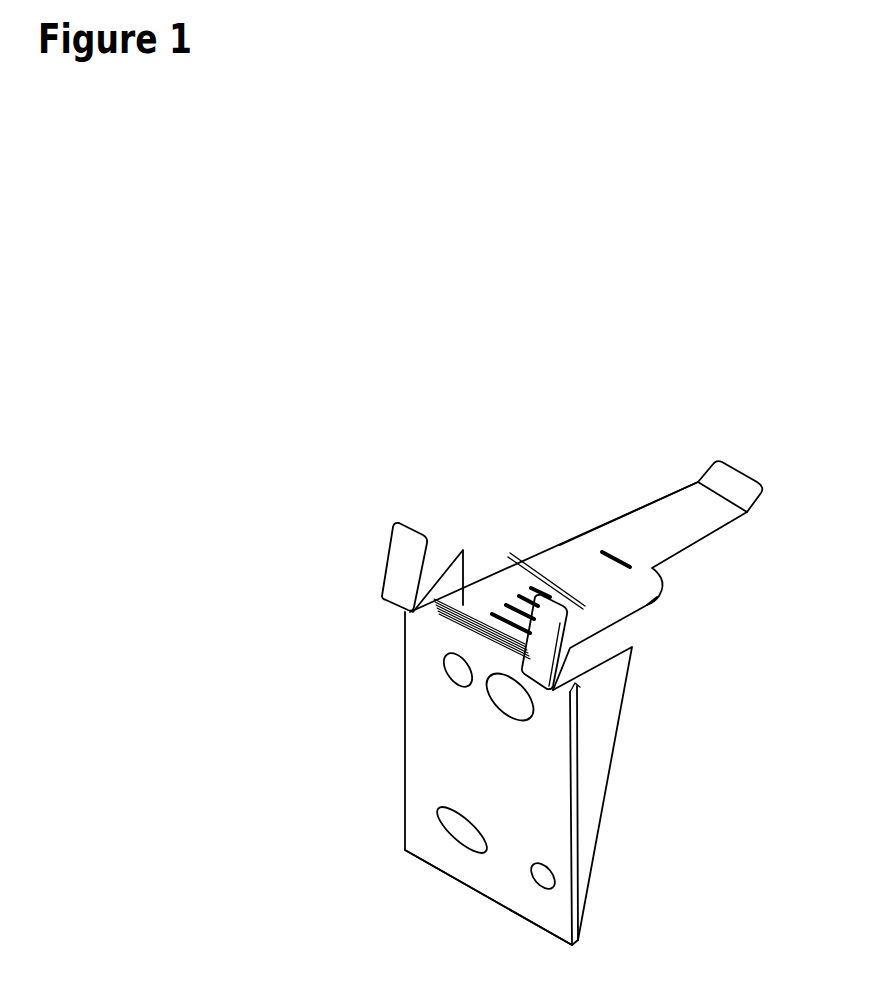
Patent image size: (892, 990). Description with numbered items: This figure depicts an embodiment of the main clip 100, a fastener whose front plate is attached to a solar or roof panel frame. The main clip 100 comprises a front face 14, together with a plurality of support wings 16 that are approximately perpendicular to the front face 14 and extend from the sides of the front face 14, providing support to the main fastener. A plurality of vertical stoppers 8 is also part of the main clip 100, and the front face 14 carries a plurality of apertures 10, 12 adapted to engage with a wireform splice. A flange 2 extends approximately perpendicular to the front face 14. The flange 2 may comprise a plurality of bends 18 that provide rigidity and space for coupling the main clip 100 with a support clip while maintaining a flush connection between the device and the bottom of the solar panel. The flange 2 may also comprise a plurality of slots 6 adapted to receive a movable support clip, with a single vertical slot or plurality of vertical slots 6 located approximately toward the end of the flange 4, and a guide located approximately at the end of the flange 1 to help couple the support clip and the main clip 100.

The main clip 100 is at (367, 300).
The end of the flange 1 is at (750, 463).
The flange 2 is at (675, 483).
The end of the flange 4 is at (618, 545).
The slots 6 is at (508, 593).
The vertical stoppers 8 is at (383, 515).
The apertures 10 is at (482, 718).
The apertures 12 is at (543, 897).
The front face 14 is at (543, 790).
The support wings 16 is at (640, 690).
The bends 18 is at (640, 622).